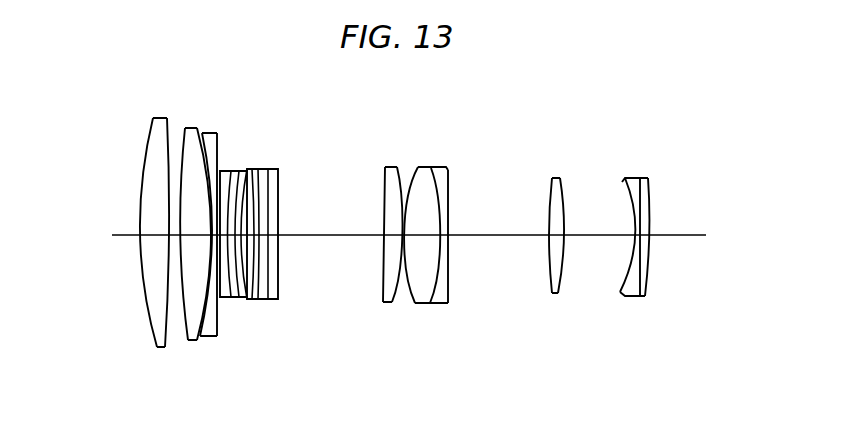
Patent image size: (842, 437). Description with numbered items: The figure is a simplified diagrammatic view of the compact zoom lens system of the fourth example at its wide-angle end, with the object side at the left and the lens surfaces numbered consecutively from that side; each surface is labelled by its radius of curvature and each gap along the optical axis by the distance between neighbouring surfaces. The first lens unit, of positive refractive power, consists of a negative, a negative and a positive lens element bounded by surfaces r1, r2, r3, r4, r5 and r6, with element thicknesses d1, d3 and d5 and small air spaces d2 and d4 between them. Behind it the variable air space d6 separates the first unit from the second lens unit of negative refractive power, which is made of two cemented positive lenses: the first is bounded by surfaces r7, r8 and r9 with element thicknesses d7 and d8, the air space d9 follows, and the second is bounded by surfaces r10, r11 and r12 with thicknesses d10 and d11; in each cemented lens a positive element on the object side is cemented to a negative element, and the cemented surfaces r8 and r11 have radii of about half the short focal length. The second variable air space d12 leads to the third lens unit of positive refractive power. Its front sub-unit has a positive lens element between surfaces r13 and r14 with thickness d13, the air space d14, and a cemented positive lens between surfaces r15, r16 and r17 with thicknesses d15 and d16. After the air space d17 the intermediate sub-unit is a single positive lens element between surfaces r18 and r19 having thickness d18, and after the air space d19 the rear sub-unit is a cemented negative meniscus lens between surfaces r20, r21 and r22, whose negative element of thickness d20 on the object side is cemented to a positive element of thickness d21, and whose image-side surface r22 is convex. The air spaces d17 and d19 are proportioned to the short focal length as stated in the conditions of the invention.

The radius of curvature of the first surface r1 is at (152, 124).
The radius of curvature of the second surface r2 is at (166, 123).
The radius of curvature of the third surface r3 is at (183, 130).
The radius of curvature of the fourth surface r4 is at (196, 130).
The radius of curvature of the fifth surface r5 is at (205, 133).
The radius of curvature of the sixth surface r6 is at (217, 135).
The radius of curvature of the seventh surface r7 is at (222, 172).
The radius of curvature of the eighth surface r8 is at (238, 172).
The radius of curvature of the ninth surface r9 is at (247, 176).
The radius of curvature of the tenth surface r10 is at (251, 187).
The radius of curvature of the eleventh surface r11 is at (280, 170).
The radius of curvature of the twelfth surface r12 is at (283, 188).
The radius of curvature of the thirteenth surface r13 is at (385, 178).
The radius of curvature of the fourteenth surface r14 is at (402, 172).
The radius of curvature of the fifteenth surface r15 is at (410, 170).
The radius of curvature of the sixteenth surface r16 is at (431, 172).
The radius of curvature of the seventeenth surface r17 is at (452, 178).
The radius of curvature of the eighteenth surface r18 is at (553, 188).
The radius of curvature of the nineteenth surface r19 is at (565, 190).
The radius of curvature of the twentieth surface r20 is at (623, 188).
The radius of curvature of the twenty-first surface r21 is at (638, 177).
The radius of curvature of the twenty-second surface r22 is at (653, 187).
The distance between the first and second surfaces d1 is at (148, 272).
The distance between the second and third surfaces d2 is at (175, 262).
The distance between the third and fourth surfaces d3 is at (195, 268).
The distance between the fourth and fifth surfaces d4 is at (213, 265).
The distance between the fifth and sixth surfaces d5 is at (219, 272).
The distance between the sixth and seventh surfaces d6 is at (225, 285).
The distance between the seventh and eighth surfaces d7 is at (233, 290).
The distance between the eighth and ninth surfaces d8 is at (243, 280).
The distance between the ninth and tenth surfaces d9 is at (250, 292).
The distance between the tenth and eleventh surfaces d10 is at (263, 287).
The distance between the eleventh and twelfth surfaces d11 is at (277, 305).
The distance between the twelfth and thirteenth surfaces d12 is at (333, 250).
The distance between the thirteenth and fourteenth surfaces d13 is at (389, 248).
The distance between the fourteenth and fifteenth surfaces d14 is at (408, 255).
The distance between the fifteenth and sixteenth surfaces d15 is at (420, 255).
The distance between the sixteenth and seventeenth surfaces d16 is at (443, 250).
The distance between the seventeenth and eighteenth surfaces d17 is at (508, 248).
The distance between the eighteenth and nineteenth surfaces d18 is at (560, 262).
The distance between the nineteenth and twentieth surfaces d19 is at (595, 240).
The distance between the twentieth and twenty-first surfaces d20 is at (636, 290).
The distance between the twenty-first and twenty-second surfaces d21 is at (647, 268).